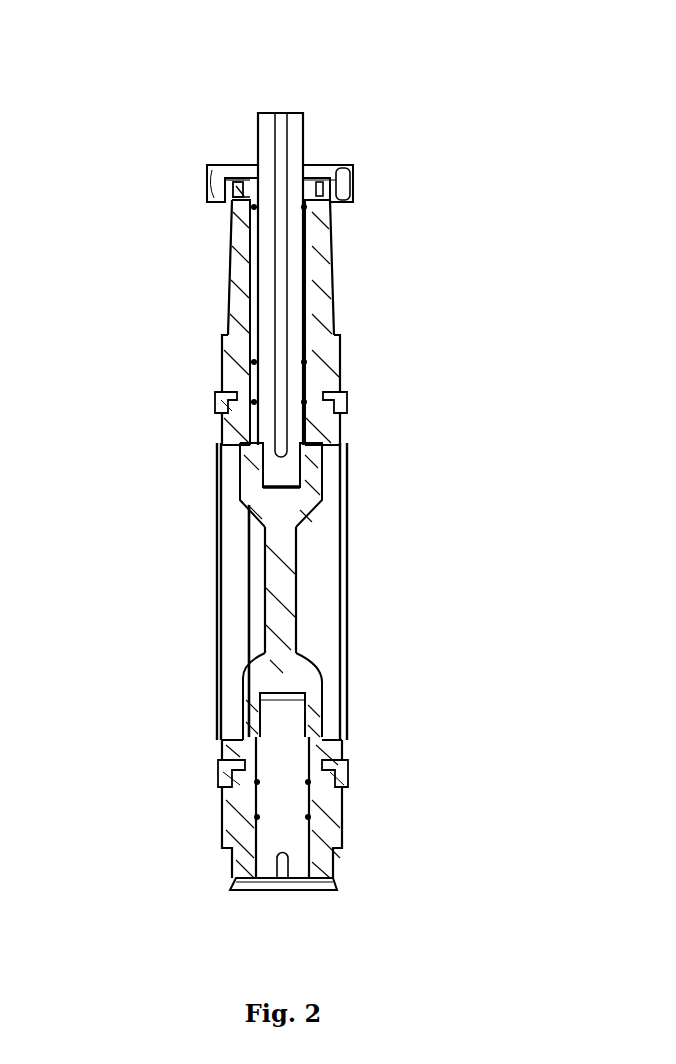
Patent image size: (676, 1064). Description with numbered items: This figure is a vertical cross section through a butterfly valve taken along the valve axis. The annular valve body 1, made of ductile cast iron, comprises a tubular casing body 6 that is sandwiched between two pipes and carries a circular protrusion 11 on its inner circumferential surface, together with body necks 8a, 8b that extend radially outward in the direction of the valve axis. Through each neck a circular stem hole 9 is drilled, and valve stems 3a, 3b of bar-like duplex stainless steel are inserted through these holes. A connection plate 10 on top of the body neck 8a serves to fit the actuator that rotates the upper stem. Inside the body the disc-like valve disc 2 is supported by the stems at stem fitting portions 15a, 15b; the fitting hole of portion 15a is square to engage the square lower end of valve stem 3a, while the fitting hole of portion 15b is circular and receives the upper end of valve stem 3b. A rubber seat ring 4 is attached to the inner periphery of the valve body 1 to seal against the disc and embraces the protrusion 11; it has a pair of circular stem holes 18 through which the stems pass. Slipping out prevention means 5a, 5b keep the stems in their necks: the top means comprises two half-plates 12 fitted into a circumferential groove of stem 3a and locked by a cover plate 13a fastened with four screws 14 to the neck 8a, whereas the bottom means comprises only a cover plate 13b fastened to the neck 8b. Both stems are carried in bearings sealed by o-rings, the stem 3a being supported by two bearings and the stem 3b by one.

The valve body 1 is at (360, 334).
The valve disc 2 is at (282, 570).
The valve stem 3a is at (291, 148).
The valve stem 3b is at (288, 827).
The seat ring 4 is at (194, 722).
The slipping out prevention means 5a is at (236, 142).
The slipping out prevention means 5b is at (301, 908).
The tubular casing body 6 is at (227, 378).
The body neck 8a is at (327, 298).
The body neck 8b is at (320, 858).
The stem hole 9 is at (318, 250).
The connection plate 10 is at (335, 187).
The circular protrusion 11 is at (322, 405).
The half-plates 12 is at (233, 179).
The cover plate 13a is at (227, 167).
The cover plate 13b is at (237, 887).
The screws 14 is at (233, 187).
The stem fitting portion 15a is at (305, 503).
The stem fitting portion 15b is at (320, 707).
The stem holes 18 is at (250, 427).